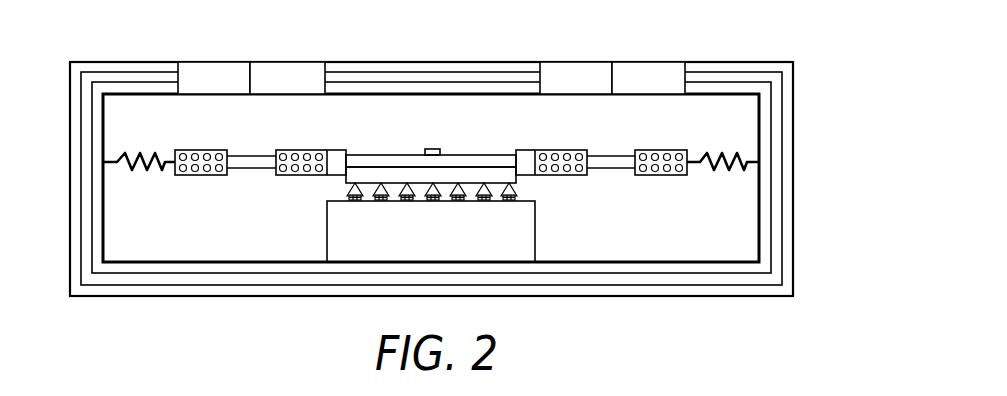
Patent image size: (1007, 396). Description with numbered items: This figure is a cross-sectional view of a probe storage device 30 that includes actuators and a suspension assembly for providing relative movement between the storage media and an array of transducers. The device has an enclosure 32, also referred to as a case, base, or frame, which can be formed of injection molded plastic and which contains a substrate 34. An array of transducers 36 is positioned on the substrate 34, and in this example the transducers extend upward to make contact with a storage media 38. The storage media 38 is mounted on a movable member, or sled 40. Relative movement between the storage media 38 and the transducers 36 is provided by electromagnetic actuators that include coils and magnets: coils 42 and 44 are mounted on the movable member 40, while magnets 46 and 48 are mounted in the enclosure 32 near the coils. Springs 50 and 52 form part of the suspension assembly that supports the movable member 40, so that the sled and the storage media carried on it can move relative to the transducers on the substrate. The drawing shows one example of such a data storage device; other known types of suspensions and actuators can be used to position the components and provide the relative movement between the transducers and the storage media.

The probe storage device 30 is at (776, 44).
The enclosure 32 is at (786, 248).
The substrate 34 is at (352, 243).
The array of transducers 36 is at (430, 201).
The storage media 38 is at (404, 181).
The movable member 40 is at (493, 163).
The coil 42 is at (200, 176).
The coil 44 is at (560, 177).
The magnet 46 is at (234, 70).
The magnet 48 is at (629, 70).
The spring 50 is at (143, 158).
The spring 52 is at (722, 163).